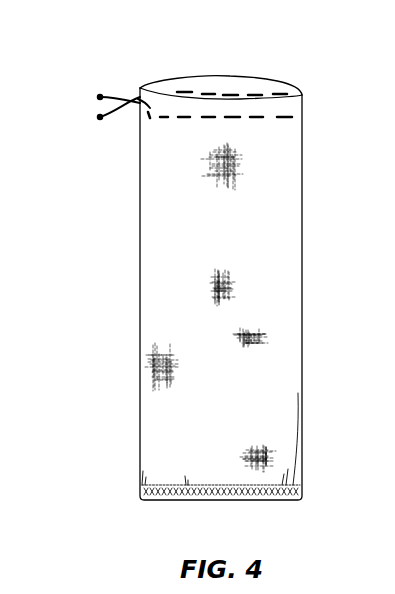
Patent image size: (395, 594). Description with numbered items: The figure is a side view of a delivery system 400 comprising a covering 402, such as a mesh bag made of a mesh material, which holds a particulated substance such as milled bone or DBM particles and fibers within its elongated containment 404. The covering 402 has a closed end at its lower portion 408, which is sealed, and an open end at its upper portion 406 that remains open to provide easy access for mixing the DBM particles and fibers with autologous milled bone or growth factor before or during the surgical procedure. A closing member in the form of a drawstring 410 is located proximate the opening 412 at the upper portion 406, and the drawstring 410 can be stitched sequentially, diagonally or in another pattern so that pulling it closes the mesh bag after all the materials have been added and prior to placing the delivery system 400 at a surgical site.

The delivery system 400 is at (80, 186).
The covering 402 is at (302, 257).
The elongated containment 404 is at (102, 312).
The upper portion 406 is at (197, 75).
The lower portion 408 is at (182, 500).
The drawstring 410 is at (97, 83).
The opening 412 is at (245, 98).